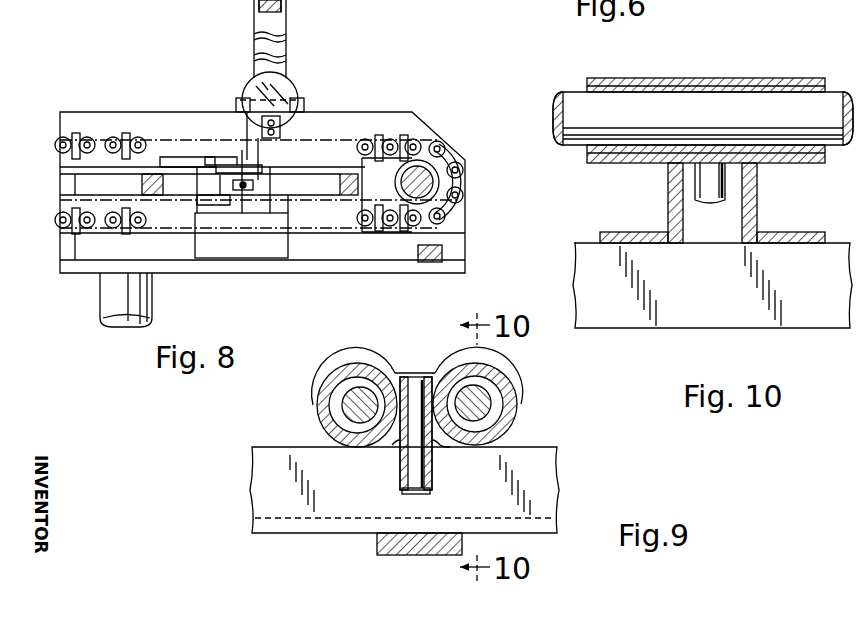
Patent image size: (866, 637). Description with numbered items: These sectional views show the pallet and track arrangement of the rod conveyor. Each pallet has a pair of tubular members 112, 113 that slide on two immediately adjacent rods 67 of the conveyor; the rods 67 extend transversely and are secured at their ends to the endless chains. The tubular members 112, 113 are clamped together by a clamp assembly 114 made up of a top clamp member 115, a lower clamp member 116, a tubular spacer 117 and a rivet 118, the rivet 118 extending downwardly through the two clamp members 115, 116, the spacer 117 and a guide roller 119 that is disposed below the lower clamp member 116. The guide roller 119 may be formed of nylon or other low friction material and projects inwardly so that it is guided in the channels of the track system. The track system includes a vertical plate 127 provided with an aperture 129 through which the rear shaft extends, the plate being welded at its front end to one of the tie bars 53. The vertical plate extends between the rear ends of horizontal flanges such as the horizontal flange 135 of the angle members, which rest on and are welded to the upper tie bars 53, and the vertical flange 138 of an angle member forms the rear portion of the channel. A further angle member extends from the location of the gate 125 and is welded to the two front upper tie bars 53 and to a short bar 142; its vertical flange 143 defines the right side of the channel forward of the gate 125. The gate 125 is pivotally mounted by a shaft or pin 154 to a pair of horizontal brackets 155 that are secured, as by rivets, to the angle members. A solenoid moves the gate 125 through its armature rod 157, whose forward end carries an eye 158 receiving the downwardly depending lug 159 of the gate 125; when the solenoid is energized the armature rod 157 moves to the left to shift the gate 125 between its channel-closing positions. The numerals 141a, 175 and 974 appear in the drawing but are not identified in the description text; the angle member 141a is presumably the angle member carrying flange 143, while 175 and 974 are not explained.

In FIG. 8, the tie bar 53 is at (340, 178).
In FIG. 10, the tie bar 53 is at (718, 318).
In FIG. 9, the rod 67 is at (396, 374).
In FIG. 10, the rod 67 is at (836, 96).
In FIG. 9, the tubular member 112 is at (326, 380).
In FIG. 9, the tubular member 113 is at (490, 376).
In FIG. 10, the tubular member 113 is at (826, 77).
In FIG. 10, the clamp assembly 114 is at (777, 76).
In FIG. 9, the top clamp member 115 is at (362, 366).
In FIG. 9, the lower clamp member 116 is at (484, 455).
In FIG. 9, the tubular spacer 117 is at (393, 445).
In FIG. 9, the rivet 118 is at (416, 494).
In FIG. 9, the guide roller 119 is at (400, 478).
In FIG. 10, the guide roller 119 is at (706, 193).
In FIG. 8, the gate 125 is at (249, 98).
In FIG. 8, the vertical plate 127 is at (418, 118).
In FIG. 8, the aperture 129 is at (444, 150).
In FIG. 8, the horizontal flange 135 is at (198, 177).
In FIG. 10, the vertical flange 138 is at (757, 199).
In FIG. 8, the rail 141a is at (151, 157).
In FIG. 8, the short bar 142 is at (142, 185).
In FIG. 8, the vertical flange 143 is at (168, 157).
In FIG. 10, the vertical flange 143 is at (668, 186).
In FIG. 8, the shaft or pin 154 is at (233, 155).
In FIG. 8, the horizontal bracket 155 is at (231, 155).
In FIG. 8, the armature rod 157 is at (248, 182).
In FIG. 8, the eye 158 is at (262, 192).
In FIG. 8, the lug 159 is at (247, 162).
In FIG. 8, the roller 175 is at (460, 198).
In FIG. 8, the base plate 974 is at (323, 253).